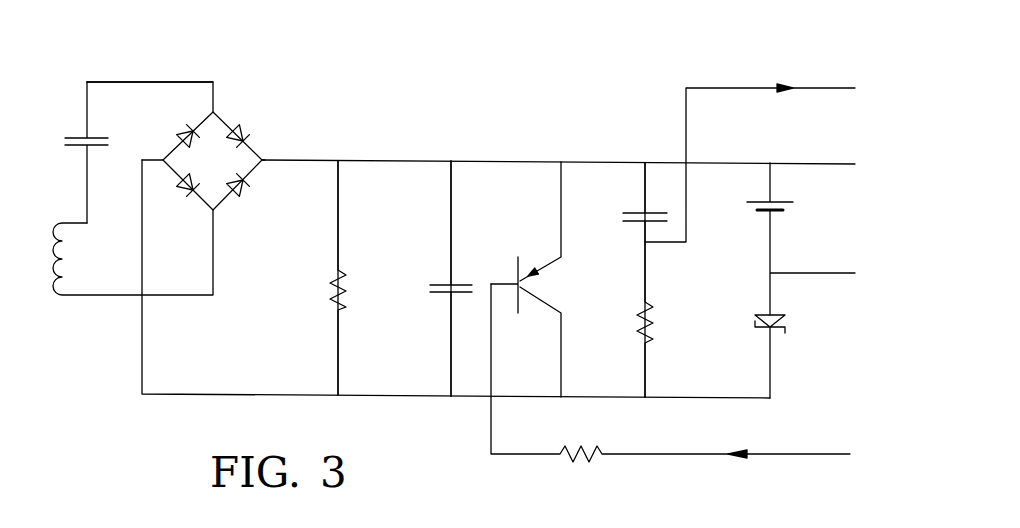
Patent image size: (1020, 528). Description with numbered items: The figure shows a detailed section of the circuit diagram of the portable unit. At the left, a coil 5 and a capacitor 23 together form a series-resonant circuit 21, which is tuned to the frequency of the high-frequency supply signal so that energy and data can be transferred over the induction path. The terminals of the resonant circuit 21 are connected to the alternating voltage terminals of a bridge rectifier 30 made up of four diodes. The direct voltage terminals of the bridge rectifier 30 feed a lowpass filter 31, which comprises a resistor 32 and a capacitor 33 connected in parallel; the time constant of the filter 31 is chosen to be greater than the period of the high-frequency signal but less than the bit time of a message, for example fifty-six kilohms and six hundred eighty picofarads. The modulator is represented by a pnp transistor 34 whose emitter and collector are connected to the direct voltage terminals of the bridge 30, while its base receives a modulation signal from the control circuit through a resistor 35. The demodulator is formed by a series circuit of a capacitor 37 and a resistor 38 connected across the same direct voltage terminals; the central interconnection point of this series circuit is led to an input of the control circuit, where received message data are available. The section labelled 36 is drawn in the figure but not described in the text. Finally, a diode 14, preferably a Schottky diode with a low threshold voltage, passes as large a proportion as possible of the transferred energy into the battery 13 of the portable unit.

The series-resonant circuit 21 is at (66, 108).
The capacitor 23 is at (83, 149).
The coil 5 is at (57, 266).
The bridge rectifier 30 is at (223, 169).
The lowpass filter 31 is at (390, 133).
The resistor 32 is at (330, 288).
The capacitor 33 is at (433, 283).
The pnp transistor 34 is at (517, 270).
The resistor 35 is at (573, 463).
The regulator section 36 is at (596, 133).
The capacitor 37 is at (625, 212).
The resistor 38 is at (637, 306).
The battery 13 is at (786, 212).
The diode 14 is at (776, 336).